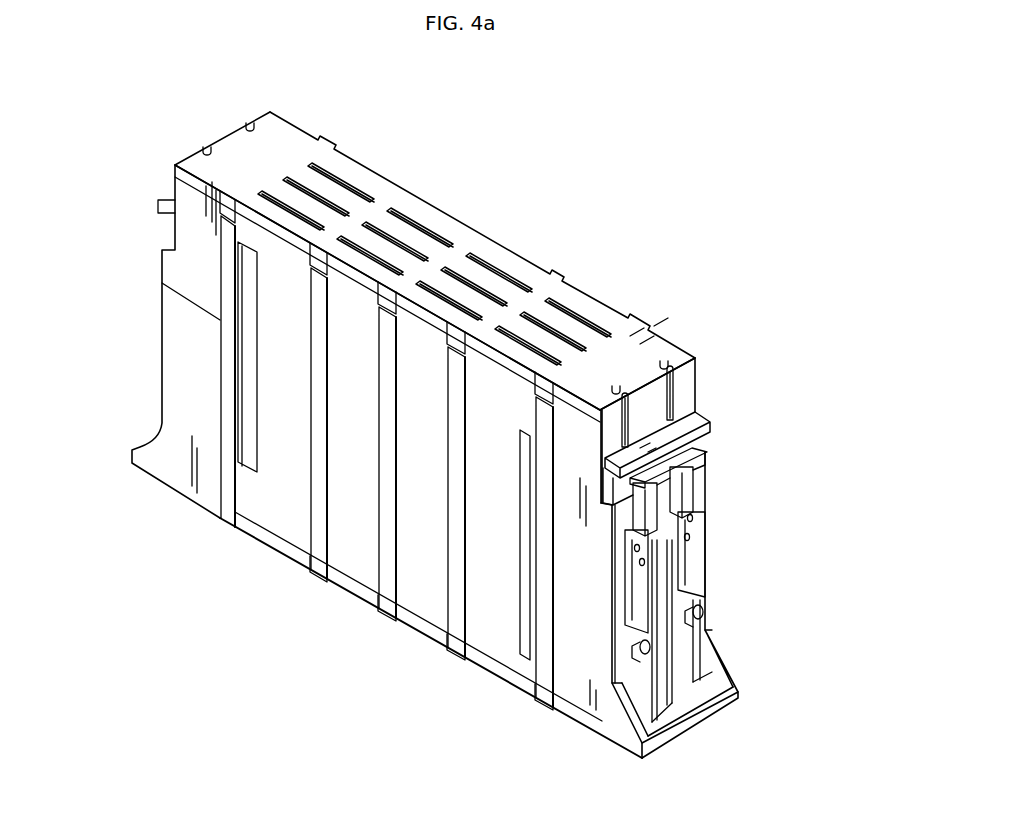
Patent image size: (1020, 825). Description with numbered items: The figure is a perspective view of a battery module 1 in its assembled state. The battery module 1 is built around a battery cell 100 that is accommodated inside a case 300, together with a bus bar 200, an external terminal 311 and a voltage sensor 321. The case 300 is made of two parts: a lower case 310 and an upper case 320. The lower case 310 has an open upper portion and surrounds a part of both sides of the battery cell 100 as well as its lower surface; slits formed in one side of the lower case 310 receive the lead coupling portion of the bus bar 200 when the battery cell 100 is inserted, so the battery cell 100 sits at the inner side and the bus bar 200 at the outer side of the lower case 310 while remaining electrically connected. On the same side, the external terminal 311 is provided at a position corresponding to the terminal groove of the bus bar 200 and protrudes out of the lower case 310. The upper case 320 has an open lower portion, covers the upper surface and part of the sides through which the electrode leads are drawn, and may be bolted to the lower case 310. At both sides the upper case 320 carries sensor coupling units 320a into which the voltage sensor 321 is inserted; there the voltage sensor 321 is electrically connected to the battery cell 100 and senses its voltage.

The battery module 1 is at (312, 89).
The battery cell 100 is at (277, 503).
The bus bar 200 is at (638, 577).
The case 300 is at (495, 765).
The lower case 310 is at (568, 700).
The upper case 320 is at (565, 480).
The sensor coupling unit 320a is at (700, 475).
The voltage sensor 321 is at (703, 422).
The external terminal 311 is at (648, 647).